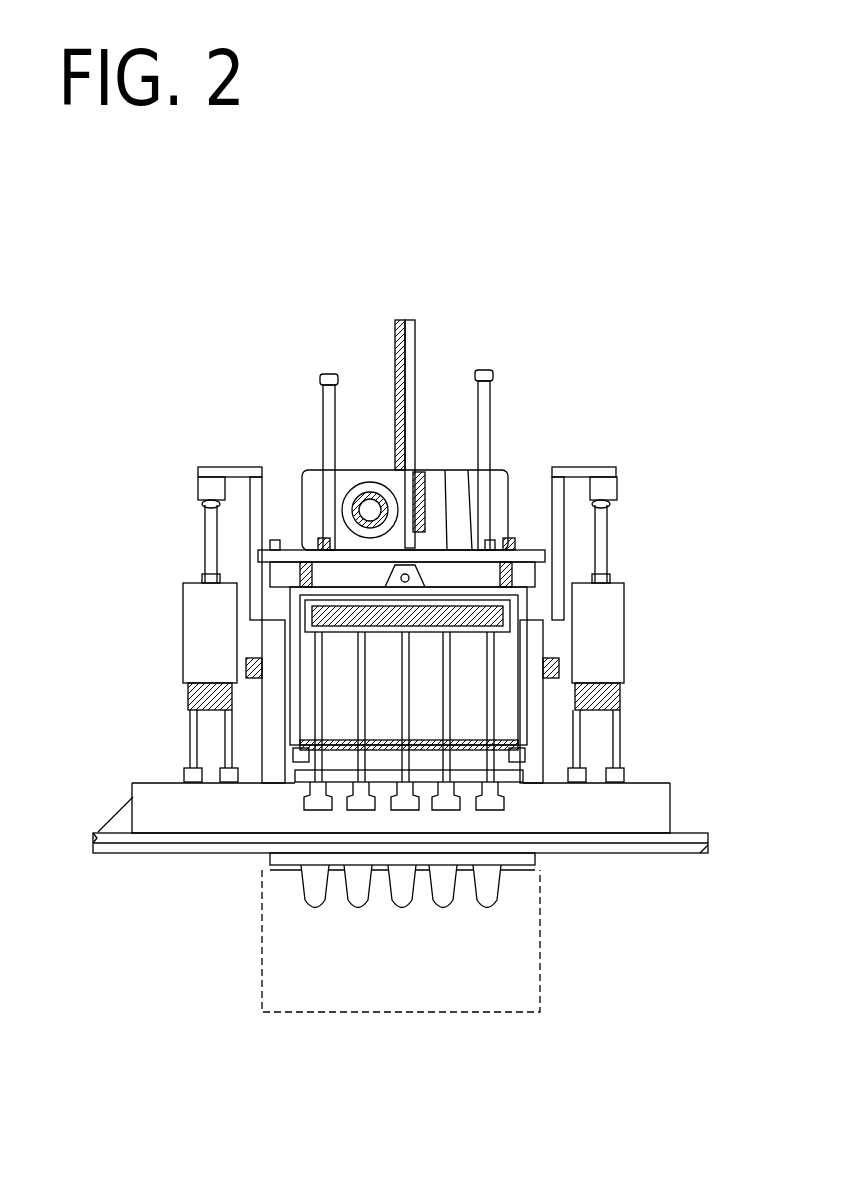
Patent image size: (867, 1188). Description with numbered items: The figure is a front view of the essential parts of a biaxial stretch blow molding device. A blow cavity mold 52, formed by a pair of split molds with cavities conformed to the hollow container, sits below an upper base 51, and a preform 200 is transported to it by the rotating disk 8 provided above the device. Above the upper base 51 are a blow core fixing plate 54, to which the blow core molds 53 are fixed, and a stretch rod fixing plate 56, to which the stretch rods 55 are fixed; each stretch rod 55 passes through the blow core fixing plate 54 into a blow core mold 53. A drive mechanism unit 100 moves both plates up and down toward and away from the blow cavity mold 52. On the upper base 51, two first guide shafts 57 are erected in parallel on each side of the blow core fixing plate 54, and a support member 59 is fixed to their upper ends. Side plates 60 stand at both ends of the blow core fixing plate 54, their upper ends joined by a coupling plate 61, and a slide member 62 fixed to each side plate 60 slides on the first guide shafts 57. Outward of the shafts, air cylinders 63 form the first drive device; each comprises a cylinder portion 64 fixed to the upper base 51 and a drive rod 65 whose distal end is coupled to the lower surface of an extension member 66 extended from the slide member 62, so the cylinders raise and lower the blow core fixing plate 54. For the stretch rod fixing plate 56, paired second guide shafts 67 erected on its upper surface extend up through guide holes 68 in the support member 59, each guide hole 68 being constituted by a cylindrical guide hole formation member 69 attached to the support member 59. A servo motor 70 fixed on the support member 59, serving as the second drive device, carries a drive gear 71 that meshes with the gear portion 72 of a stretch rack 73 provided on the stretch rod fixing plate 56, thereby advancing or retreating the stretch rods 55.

The drive mechanism unit 100 is at (529, 298).
The rotating disk 8 is at (680, 849).
The upper base 51 is at (688, 828).
The blow cavity mold 52 is at (540, 947).
The blow core mold 53 is at (300, 810).
The blow core fixing plate 54 is at (565, 760).
The stretch rod 55 is at (452, 688).
The stretch rod fixing plate 56 is at (525, 632).
The first guide shaft 57 is at (262, 585).
The support member 59 is at (520, 540).
The side plate 60 is at (295, 718).
The coupling plate 61 is at (444, 548).
The slide member 62 is at (275, 650).
The air cylinder 63 is at (112, 522).
The cylinder portion 64 is at (188, 587).
The drive rod 65 is at (215, 565).
The extension member 66 is at (228, 470).
The second guide shaft 67 is at (322, 400).
The guide hole 68 is at (305, 530).
The guide hole formation member 69 is at (320, 562).
The servo motor 70 is at (347, 470).
The drive gear 71 is at (375, 480).
The gear portion 72 is at (394, 372).
The stretch rack 73 is at (416, 352).
The preform 200 is at (310, 900).